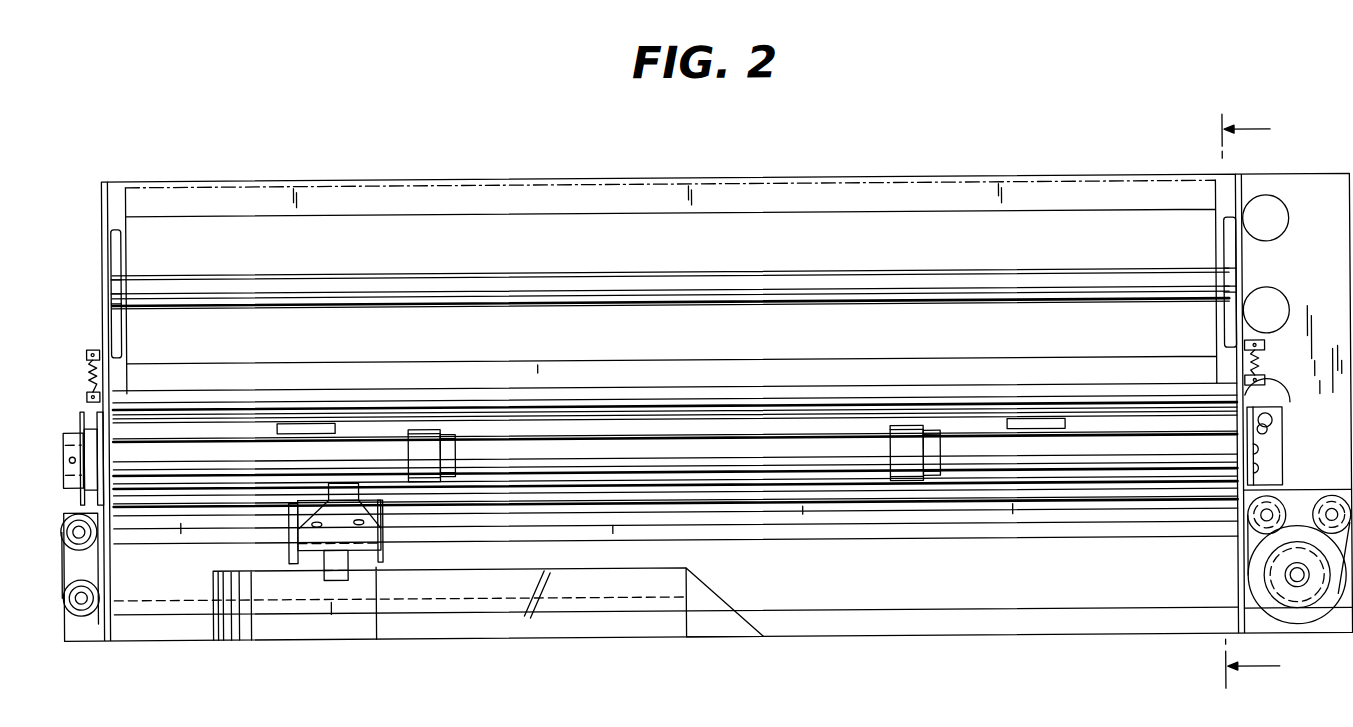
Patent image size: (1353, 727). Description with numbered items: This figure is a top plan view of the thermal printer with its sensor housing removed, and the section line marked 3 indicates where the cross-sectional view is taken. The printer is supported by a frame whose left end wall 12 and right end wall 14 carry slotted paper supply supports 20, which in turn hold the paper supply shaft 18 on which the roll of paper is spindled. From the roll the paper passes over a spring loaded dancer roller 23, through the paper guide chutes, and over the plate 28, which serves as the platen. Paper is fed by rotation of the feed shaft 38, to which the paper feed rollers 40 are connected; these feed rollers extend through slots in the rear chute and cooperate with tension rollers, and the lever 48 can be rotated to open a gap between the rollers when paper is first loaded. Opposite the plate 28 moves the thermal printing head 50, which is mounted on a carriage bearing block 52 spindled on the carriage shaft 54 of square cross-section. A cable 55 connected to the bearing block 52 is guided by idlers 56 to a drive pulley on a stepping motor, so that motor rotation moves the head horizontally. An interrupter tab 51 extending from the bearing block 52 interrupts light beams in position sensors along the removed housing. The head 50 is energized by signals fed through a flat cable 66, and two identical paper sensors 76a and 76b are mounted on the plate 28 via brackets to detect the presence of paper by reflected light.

The section line 3- 3 is at (1259, 401).
The left end wall 12 is at (107, 204).
The right end wall 14 is at (1242, 192).
The paper supply shaft 18 is at (513, 287).
The paper supply supports 20 is at (1245, 274).
The dancer roller 23 is at (1068, 390).
The plate 28 is at (805, 373).
The feed shaft 38 is at (740, 458).
The paper feed rollers 40 is at (440, 451).
The lever 48 is at (1268, 432).
The thermal printing head 50 is at (338, 496).
The interrupter tab 51 is at (325, 571).
The carriage bearing block 52 is at (383, 550).
The carriage shaft 54 is at (820, 534).
The cable 55 is at (708, 508).
The idlers 56 is at (95, 594).
The flat cable 66 is at (285, 630).
The sensor 76a is at (313, 417).
The sensor 76b is at (1020, 423).